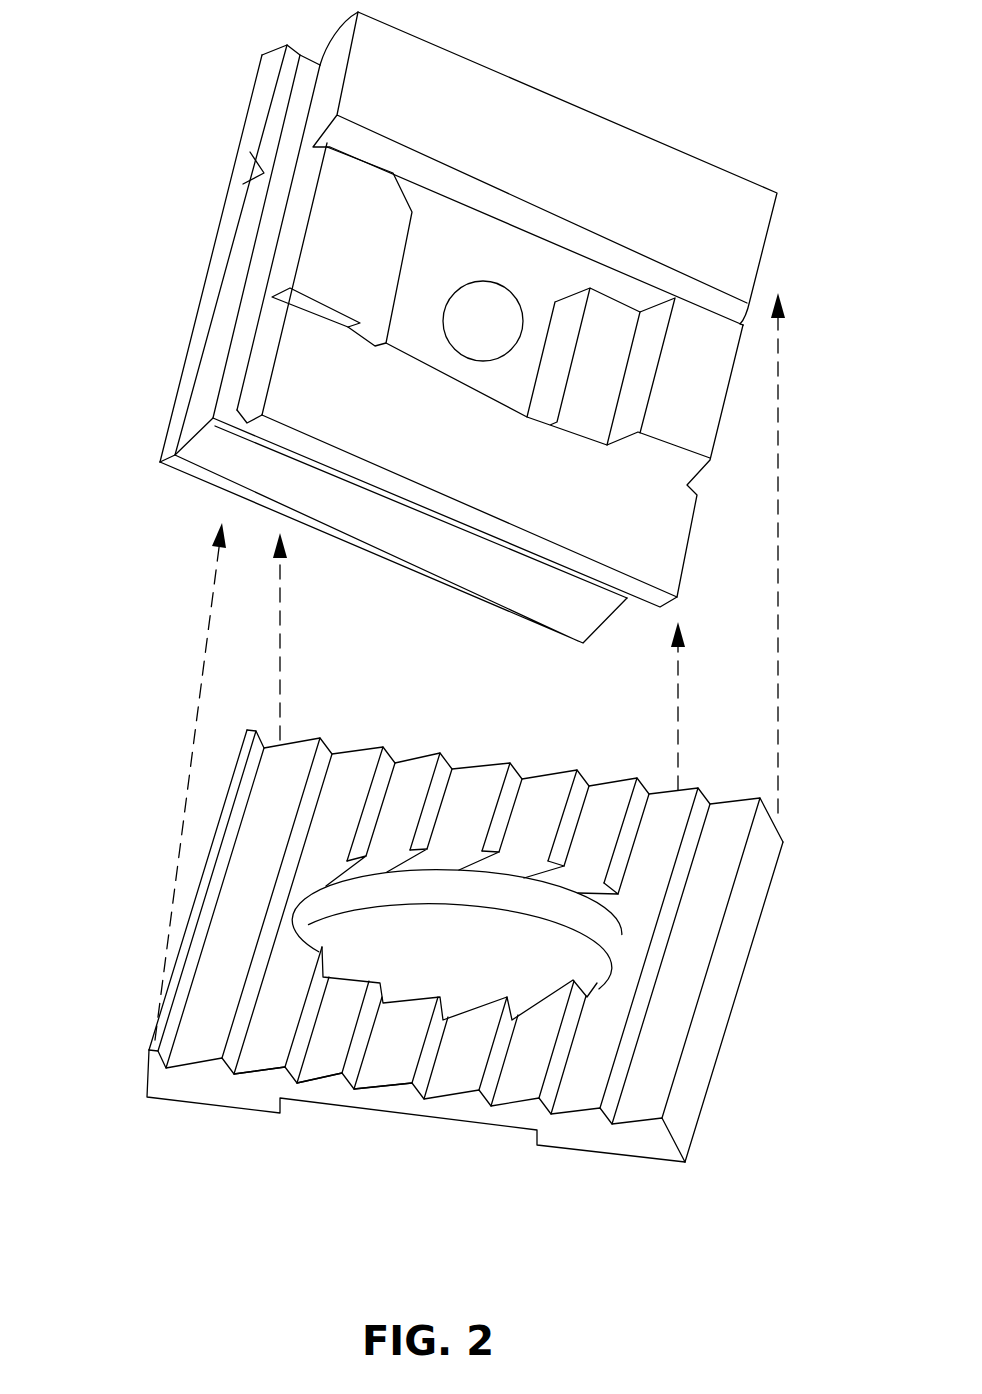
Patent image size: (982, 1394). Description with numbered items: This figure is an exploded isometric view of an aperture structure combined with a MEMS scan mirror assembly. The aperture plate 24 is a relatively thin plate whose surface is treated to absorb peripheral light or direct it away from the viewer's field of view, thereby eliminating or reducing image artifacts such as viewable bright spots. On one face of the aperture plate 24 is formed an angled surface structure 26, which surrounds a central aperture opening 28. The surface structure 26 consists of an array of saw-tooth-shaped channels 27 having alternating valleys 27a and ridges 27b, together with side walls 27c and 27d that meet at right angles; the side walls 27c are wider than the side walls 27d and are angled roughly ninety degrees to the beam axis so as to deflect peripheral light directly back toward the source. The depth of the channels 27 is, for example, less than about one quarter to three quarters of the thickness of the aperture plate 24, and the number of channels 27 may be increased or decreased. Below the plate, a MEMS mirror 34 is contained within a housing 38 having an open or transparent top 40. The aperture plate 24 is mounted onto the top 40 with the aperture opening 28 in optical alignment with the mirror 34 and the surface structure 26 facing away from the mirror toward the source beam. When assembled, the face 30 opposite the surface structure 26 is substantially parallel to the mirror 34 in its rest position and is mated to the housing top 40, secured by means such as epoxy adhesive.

The aperture plate 24 is at (484, 927).
The angled surface structure 26 is at (322, 1050).
The saw-tooth-shaped channels 27 is at (512, 865).
The valleys 27a is at (332, 742).
The ridges 27b is at (425, 757).
The side walls 27c is at (603, 785).
The side walls 27d is at (642, 910).
The central aperture opening 28 is at (603, 965).
The face 30 is at (396, 1136).
The MEMS mirror 34 is at (480, 322).
The housing 38 is at (187, 247).
The top 40 is at (727, 200).